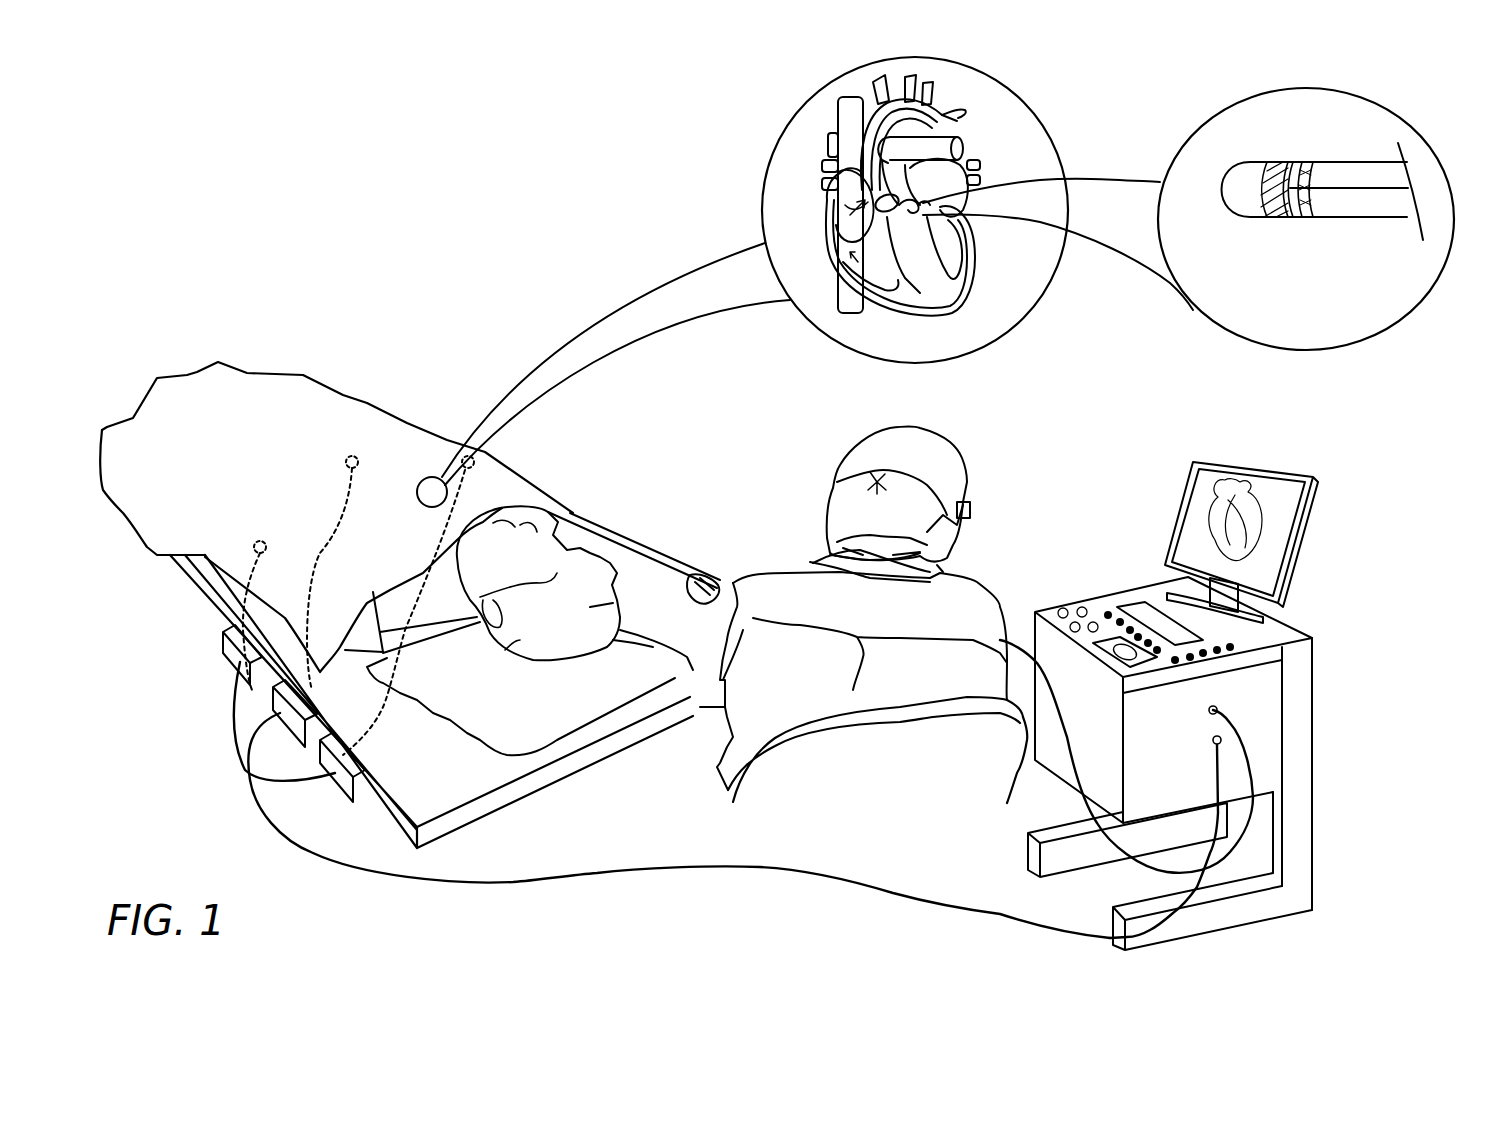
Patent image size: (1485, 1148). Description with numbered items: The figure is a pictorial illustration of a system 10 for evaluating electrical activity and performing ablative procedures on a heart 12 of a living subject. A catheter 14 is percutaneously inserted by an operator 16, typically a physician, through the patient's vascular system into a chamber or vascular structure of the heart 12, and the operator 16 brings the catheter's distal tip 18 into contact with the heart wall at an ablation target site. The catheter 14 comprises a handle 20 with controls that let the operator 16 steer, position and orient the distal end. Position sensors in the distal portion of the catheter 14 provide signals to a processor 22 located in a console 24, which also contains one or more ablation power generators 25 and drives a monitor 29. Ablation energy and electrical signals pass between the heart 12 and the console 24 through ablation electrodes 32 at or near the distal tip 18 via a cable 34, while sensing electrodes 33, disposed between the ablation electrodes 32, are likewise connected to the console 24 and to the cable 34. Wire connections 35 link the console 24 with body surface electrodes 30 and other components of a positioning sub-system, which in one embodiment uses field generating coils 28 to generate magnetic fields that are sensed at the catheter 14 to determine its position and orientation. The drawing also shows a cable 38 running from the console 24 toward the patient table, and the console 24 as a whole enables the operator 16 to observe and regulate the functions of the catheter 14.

The system 10 is at (1422, 79).
The heart 12 is at (943, 300).
The catheter 14 is at (965, 112).
The operator 16 is at (752, 572).
The distal tip 18 is at (1250, 220).
The handle 20 is at (696, 578).
The processor 22 is at (1280, 775).
The console 24 is at (1342, 618).
The ablation power generators 25 is at (1278, 662).
The field generating coils 28 is at (330, 793).
The monitor 29 is at (1315, 497).
The body surface electrodes 30 is at (345, 462).
The ablation electrodes 32 is at (1275, 161).
The sensing electrodes 33 is at (1305, 219).
The cable 34 is at (1389, 218).
The wire connections 35 is at (244, 582).
The cable 38 is at (1072, 828).